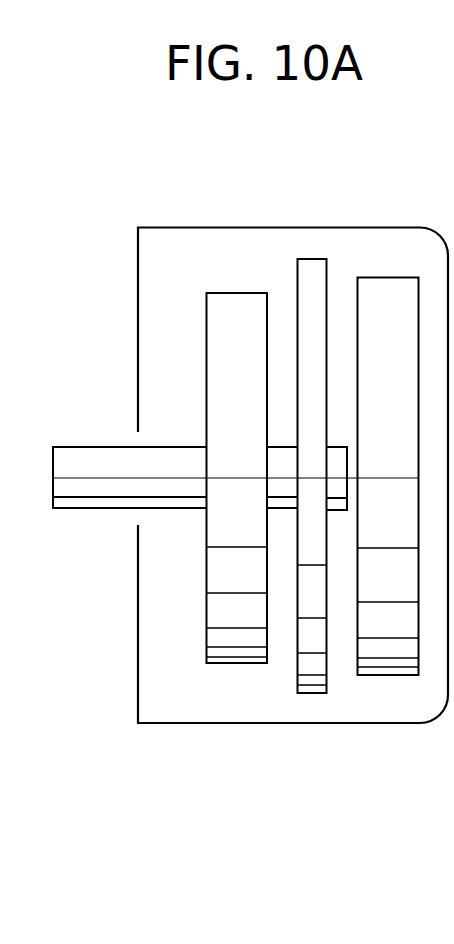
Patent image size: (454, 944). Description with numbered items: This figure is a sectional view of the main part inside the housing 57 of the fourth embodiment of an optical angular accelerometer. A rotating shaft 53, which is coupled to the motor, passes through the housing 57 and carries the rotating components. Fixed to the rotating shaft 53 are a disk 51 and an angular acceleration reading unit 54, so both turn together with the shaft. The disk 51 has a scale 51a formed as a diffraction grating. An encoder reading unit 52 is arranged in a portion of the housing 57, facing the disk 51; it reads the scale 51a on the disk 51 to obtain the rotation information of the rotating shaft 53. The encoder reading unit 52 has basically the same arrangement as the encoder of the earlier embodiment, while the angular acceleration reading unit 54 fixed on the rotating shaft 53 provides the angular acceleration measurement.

The disk 51 is at (315, 662).
The scale 51a is at (297, 277).
The encoder reading unit 52 is at (393, 648).
The rotating shaft 53 is at (95, 503).
The angular acceleration reading unit 54 is at (242, 648).
The housing 57 is at (175, 723).